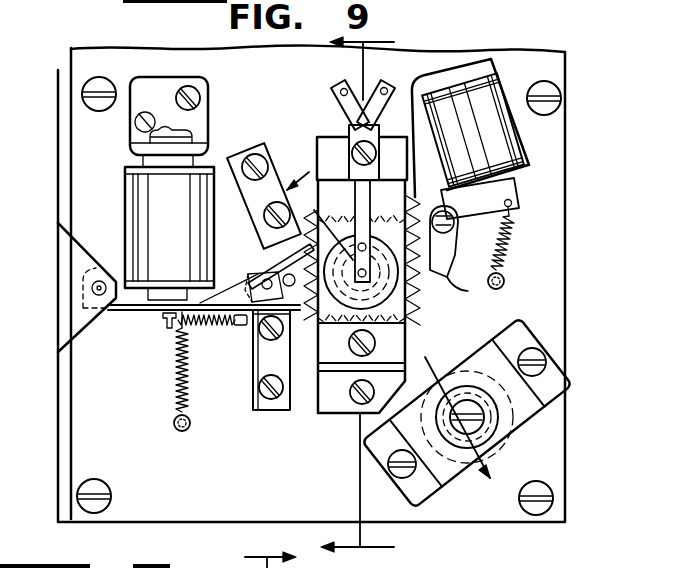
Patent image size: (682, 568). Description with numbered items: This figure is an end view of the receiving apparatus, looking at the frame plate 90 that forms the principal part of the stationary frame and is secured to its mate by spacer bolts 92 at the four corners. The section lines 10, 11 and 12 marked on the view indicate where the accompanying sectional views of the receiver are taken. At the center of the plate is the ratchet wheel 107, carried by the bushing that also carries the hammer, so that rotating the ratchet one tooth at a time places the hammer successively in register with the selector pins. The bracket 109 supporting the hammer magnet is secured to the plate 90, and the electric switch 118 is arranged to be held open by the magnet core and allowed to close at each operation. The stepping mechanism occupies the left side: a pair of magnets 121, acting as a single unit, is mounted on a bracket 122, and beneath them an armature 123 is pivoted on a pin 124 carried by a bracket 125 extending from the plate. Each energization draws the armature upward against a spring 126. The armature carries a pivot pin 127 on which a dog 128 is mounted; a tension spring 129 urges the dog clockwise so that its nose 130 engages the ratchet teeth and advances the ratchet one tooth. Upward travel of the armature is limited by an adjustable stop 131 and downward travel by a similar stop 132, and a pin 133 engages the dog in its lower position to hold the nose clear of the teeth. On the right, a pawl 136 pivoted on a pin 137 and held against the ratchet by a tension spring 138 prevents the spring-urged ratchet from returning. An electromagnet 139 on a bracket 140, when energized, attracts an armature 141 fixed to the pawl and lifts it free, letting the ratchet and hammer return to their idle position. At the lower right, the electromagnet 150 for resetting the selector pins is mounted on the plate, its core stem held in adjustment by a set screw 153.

The section line 10— 10 is at (368, 290).
The section line 11 is at (418, 312).
The section line 12— 12 is at (270, 550).
The frame plate 90 is at (567, 235).
The spacer bolts 92 is at (97, 88).
The ratchet wheel 107 is at (377, 296).
The bracket 109 is at (400, 346).
The electric switch 118 is at (343, 231).
The magnets 121 is at (169, 233).
The bracket 122 is at (200, 107).
The armature 123 is at (137, 316).
The pin 124 is at (98, 281).
The bracket 125 is at (62, 297).
The spring 126 is at (170, 385).
The pivot pin 127 is at (258, 279).
The dog 128 is at (262, 262).
The tension spring 129 is at (218, 324).
The nose 130 is at (321, 228).
The adjustable stop 131 is at (285, 172).
The stop 132 is at (282, 414).
The pin 133 is at (290, 287).
The pawl 136 is at (470, 297).
The pin 137 is at (457, 216).
The tension spring 138 is at (509, 245).
The electromagnet 139 is at (473, 129).
The bracket 140 is at (456, 77).
The armature 141 is at (516, 185).
The electromagnet 150 is at (512, 397).
The set screw 153 is at (478, 420).